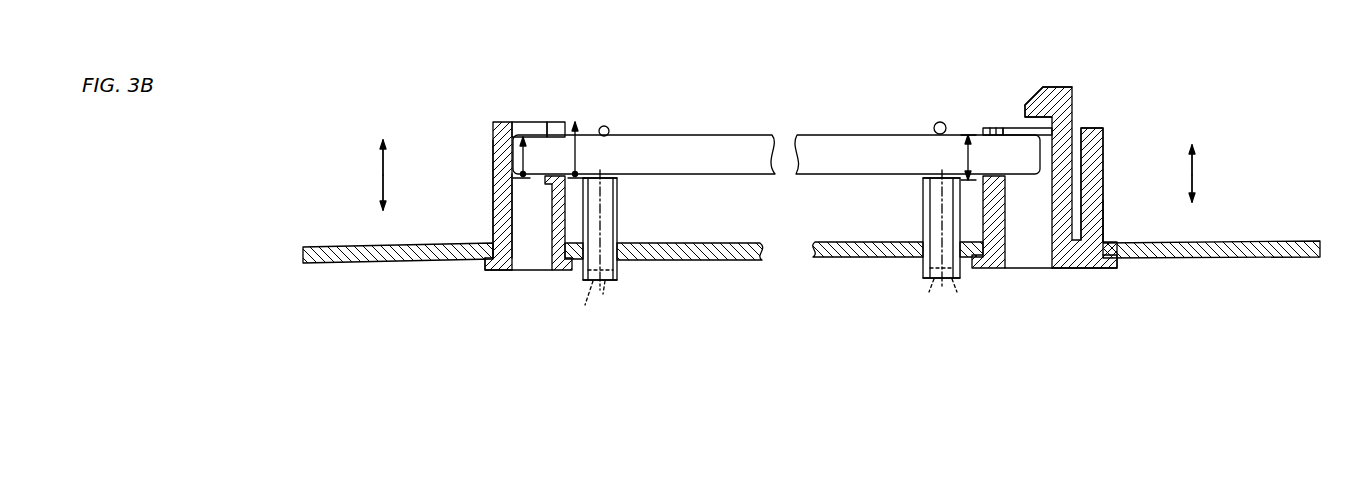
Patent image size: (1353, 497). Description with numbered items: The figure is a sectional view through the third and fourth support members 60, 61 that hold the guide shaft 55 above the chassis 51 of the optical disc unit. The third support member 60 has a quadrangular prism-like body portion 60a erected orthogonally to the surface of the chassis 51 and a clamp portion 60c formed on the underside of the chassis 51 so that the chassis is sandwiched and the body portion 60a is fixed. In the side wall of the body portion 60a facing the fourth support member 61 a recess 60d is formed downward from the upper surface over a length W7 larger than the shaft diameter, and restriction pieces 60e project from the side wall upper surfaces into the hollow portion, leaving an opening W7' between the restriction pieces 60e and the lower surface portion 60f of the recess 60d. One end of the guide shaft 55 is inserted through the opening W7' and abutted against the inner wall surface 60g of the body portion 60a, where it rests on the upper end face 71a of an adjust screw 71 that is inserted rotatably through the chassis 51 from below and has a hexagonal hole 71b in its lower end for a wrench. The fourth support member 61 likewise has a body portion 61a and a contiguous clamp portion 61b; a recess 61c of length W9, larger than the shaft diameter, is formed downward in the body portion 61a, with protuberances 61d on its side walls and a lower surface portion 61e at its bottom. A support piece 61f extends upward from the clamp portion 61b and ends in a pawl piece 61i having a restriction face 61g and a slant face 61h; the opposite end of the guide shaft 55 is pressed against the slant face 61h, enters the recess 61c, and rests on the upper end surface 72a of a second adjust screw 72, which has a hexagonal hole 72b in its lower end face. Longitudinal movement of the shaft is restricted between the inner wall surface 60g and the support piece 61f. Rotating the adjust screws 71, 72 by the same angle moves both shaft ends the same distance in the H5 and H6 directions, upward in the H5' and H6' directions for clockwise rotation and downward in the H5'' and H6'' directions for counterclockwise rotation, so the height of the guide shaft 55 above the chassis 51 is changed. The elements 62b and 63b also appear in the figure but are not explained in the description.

The chassis 51 is at (737, 243).
The guide shaft 55 is at (736, 148).
The third support member 60 is at (485, 165).
The body portion 60a is at (512, 207).
The clamp portion 60c is at (498, 272).
The recess 60d is at (556, 122).
The restriction pieces 60e is at (530, 122).
The lower surface portion 60f is at (546, 178).
The inner wall surface 60g is at (491, 232).
The fourth support member 61 is at (1110, 125).
The body portion 61a is at (1104, 222).
The clamp portion 61b is at (1085, 270).
The recess 61c is at (1000, 128).
The protuberances 61d is at (990, 128).
The lower surface portion 61e is at (1007, 182).
The support piece 61f is at (1104, 180).
The restriction face 61g is at (1028, 127).
The slant face 61h is at (1032, 95).
The pawl piece 61i is at (1074, 100).
The positioning ball 62b is at (609, 127).
The positioning ball 63b is at (936, 123).
The adjust screw 71 is at (628, 275).
The upper end face 71a is at (607, 176).
The hexagonal hole 71b is at (598, 283).
The adjust screw 72 is at (914, 276).
The upper end surface 72a is at (936, 176).
The hexagonal hole 72b is at (946, 283).
The length of recess W7 is at (594, 128).
The opening W7' is at (475, 136).
The length of recess W9 is at (952, 128).
The adjustment direction H5 is at (342, 175).
The upward direction H5' is at (345, 150).
The downward direction H5'' is at (345, 196).
The adjustment direction H6 is at (1228, 173).
The upward direction H6' is at (1227, 150).
The downward direction H6'' is at (1229, 196).